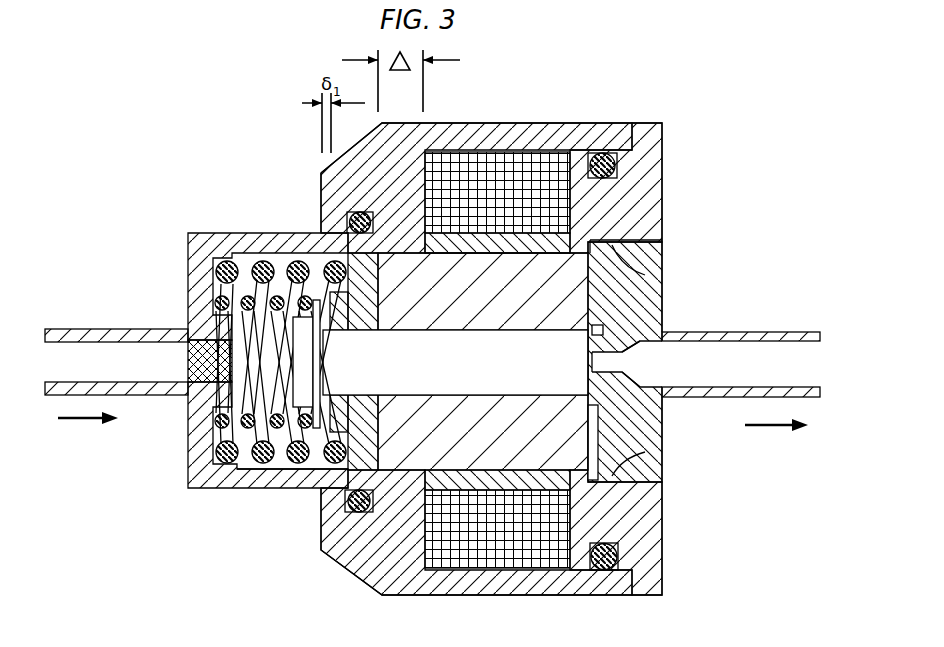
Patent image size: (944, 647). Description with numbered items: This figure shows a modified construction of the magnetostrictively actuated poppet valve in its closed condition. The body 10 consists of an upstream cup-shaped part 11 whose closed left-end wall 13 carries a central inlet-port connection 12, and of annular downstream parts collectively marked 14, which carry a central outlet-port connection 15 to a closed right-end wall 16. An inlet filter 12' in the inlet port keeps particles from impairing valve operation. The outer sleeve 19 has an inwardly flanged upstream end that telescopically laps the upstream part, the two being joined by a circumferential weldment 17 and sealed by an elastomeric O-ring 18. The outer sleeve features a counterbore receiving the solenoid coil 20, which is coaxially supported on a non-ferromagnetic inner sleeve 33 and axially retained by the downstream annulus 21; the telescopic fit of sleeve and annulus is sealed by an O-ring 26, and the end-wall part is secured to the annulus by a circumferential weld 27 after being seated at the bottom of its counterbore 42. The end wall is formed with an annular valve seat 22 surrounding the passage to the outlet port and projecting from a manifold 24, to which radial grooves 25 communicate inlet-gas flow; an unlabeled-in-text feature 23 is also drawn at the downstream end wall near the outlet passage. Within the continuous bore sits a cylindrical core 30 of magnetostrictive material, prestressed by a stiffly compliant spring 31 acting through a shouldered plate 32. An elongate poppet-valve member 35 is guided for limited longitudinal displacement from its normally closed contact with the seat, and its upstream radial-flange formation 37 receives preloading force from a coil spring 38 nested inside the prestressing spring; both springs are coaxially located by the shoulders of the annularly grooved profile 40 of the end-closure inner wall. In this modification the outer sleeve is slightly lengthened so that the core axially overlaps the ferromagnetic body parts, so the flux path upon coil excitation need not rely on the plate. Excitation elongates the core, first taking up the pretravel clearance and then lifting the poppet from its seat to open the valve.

The body 10 is at (234, 496).
The upstream cup-shaped part 11 is at (247, 234).
The inlet-port connection 12 is at (116, 344).
The inlet filter 12' is at (183, 330).
The left-end wall 13 is at (195, 438).
The downstream parts 14 is at (509, 125).
The outlet-port connection 15 is at (758, 332).
The right-end wall 16 is at (650, 302).
The circumferential weldment 17 is at (322, 492).
The O-ring 18 is at (355, 500).
The outer sleeve 19 is at (453, 128).
The solenoid coil 20 is at (438, 540).
The downstream annulus 21 is at (667, 170).
The valve seat 22 is at (592, 350).
The nozzle 23 is at (640, 398).
The manifold 24 is at (600, 332).
The radial grooves 25 is at (596, 452).
The O-ring 26 is at (606, 157).
The circumferential weld 27 is at (665, 245).
The magnetostrictive core 30 is at (463, 301).
The prestressing spring 31 is at (217, 268).
The shouldered plate 32 is at (372, 427).
The inner sleeve 33 is at (548, 256).
The poppet-valve member 35 is at (413, 368).
The radial-flange formation 37 is at (300, 378).
The coil spring 38 is at (232, 462).
The annularly grooved profile 40 is at (316, 372).
The counterbore 42 is at (637, 268).